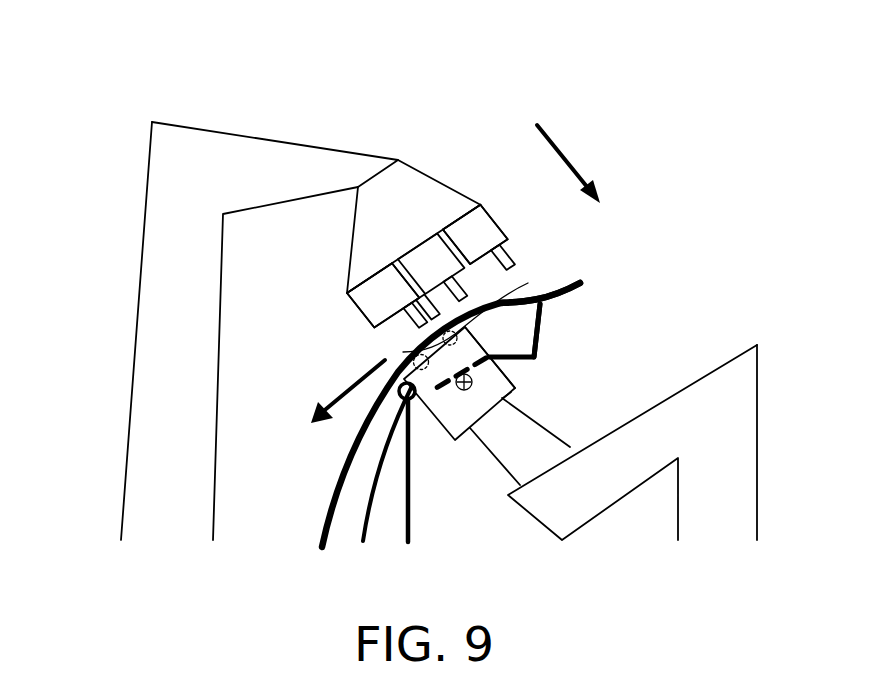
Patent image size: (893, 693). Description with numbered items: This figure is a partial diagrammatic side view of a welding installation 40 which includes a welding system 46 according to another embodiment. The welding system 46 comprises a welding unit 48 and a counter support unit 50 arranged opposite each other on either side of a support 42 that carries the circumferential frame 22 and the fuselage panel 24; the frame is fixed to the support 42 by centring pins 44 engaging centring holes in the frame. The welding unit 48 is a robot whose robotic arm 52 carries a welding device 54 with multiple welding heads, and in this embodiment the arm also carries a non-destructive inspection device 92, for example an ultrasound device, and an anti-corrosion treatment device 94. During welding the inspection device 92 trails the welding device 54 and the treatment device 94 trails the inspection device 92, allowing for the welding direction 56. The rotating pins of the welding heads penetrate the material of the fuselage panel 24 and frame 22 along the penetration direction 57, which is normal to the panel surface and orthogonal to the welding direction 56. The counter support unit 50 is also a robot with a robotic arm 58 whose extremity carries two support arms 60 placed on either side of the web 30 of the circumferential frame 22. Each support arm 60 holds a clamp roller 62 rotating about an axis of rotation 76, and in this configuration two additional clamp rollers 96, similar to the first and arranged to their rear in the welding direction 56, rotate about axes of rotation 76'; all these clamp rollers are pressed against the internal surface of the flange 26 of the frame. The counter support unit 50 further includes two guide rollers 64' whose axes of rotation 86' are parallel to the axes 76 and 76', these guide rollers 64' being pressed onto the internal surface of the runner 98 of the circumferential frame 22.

The printing system 40 is at (689, 106).
The circumferential frame 22 is at (548, 327).
The fuselage panel 24 is at (581, 283).
The flange 26 is at (545, 298).
The web 30 is at (545, 313).
The support 42 is at (408, 545).
The centring pins 44 is at (398, 396).
The welding system 46 is at (95, 298).
The welding unit 48 is at (205, 124).
The counter support unit 50 is at (738, 350).
The robotic arm 52 is at (437, 180).
The welding device 54 is at (346, 298).
The welding direction 56 is at (327, 412).
The penetration direction 57 is at (558, 143).
The robotic arm 58 is at (506, 498).
The support arms 60 is at (455, 440).
The clamp roller 62 is at (452, 416).
The guide rollers 64' is at (479, 430).
The axis of rotation 76 is at (380, 346).
The axis of rotation 76' is at (498, 287).
The axes of rotation 86' is at (539, 391).
The non-destructive inspection device 92 is at (441, 234).
The anti-corrosion treatment device 94 is at (495, 223).
The additional clamp rollers 96 is at (448, 346).
The runner 98 is at (364, 545).